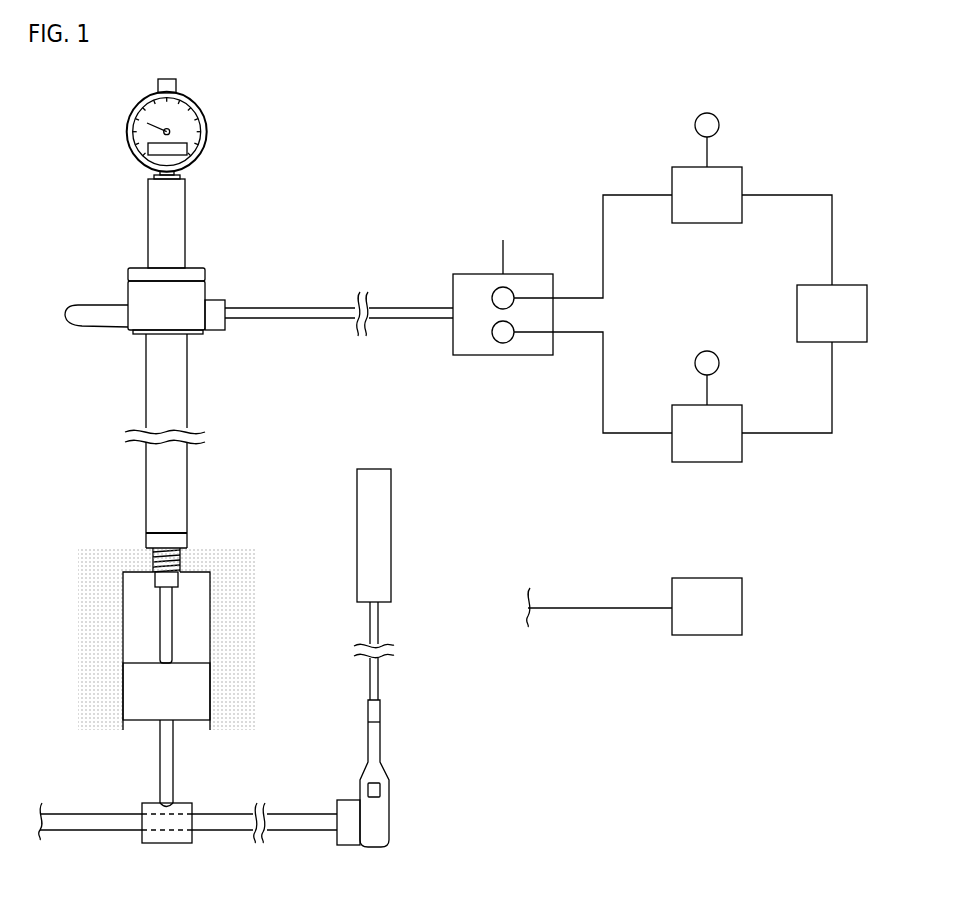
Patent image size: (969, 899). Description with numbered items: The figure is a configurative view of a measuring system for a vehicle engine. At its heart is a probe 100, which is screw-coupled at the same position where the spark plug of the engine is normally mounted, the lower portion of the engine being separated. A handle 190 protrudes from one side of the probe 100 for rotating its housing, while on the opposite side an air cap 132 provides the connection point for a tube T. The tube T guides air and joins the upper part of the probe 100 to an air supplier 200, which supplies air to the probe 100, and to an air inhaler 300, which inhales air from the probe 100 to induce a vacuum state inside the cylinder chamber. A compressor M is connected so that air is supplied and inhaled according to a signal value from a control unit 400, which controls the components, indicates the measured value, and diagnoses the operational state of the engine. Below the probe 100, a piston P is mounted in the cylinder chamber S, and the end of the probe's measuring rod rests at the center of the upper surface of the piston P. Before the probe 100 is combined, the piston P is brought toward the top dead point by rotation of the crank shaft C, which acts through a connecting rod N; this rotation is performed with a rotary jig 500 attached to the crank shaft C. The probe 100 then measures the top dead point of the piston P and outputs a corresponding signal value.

The probe 100 is at (232, 122).
The handle 190 is at (92, 327).
The air cap 132 is at (228, 325).
The tube T is at (290, 310).
The air supplier 200 is at (730, 165).
The air inhaler 300 is at (706, 464).
The compressor M is at (848, 283).
The control unit 400 is at (745, 607).
The rotary jig 500 is at (404, 728).
The cylinder chamber S is at (125, 605).
The piston P is at (123, 692).
The connecting rod N is at (157, 762).
The crank shaft C is at (298, 832).